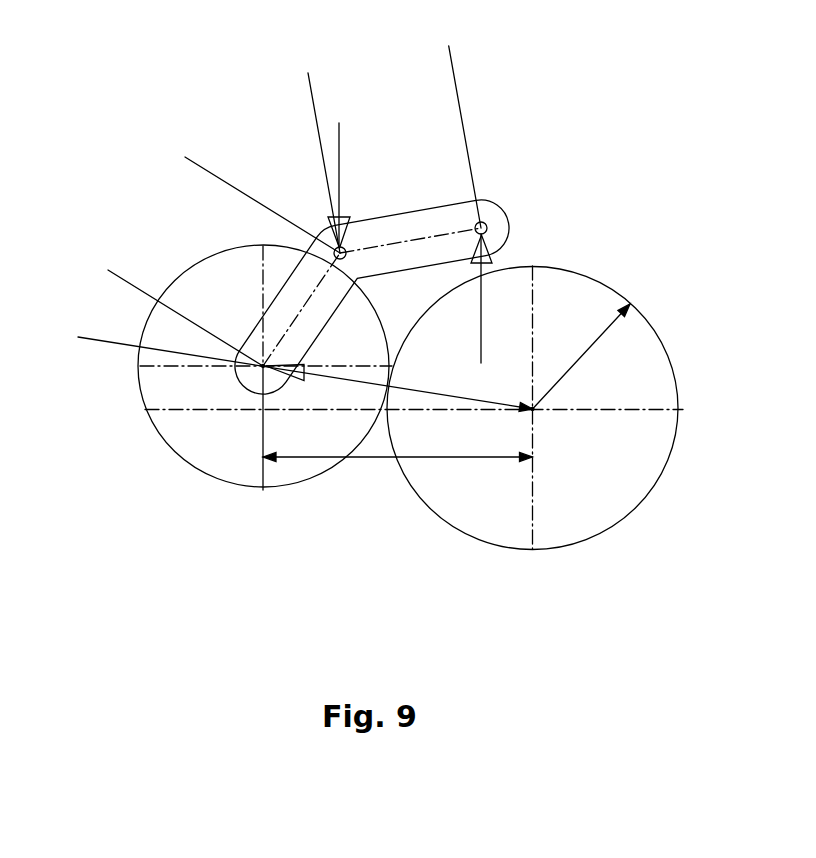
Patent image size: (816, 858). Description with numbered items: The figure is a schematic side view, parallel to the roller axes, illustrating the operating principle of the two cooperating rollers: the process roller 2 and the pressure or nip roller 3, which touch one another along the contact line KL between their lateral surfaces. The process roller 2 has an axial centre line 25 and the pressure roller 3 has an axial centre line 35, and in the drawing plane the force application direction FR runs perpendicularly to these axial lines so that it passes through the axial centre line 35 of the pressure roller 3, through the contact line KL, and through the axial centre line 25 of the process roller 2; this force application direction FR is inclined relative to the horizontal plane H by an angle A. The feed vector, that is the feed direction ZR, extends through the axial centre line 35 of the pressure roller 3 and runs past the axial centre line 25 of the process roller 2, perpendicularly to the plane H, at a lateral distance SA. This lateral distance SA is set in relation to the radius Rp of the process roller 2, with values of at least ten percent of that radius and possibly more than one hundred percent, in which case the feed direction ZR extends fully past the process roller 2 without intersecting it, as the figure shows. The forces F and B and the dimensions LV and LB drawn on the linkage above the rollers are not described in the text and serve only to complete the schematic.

The process roller 2 is at (488, 446).
The axial centre line of the process roller 25 is at (626, 494).
The pressure roller 3 is at (227, 385).
The axial centre line of the pressure roller 35 is at (157, 428).
The angle between frame line and horizontal A is at (321, 356).
The force at link pivot B is at (495, 298).
The force at swing arm pivot F is at (350, 185).
The force application direction FR is at (305, 451).
The plane H is at (446, 369).
The contact line KL is at (340, 477).
The link length LB is at (452, 66).
The swing arm length LV is at (199, 166).
The radius of the process roller Rp is at (644, 353).
The lateral distance SA is at (398, 524).
The feed direction ZR is at (253, 106).